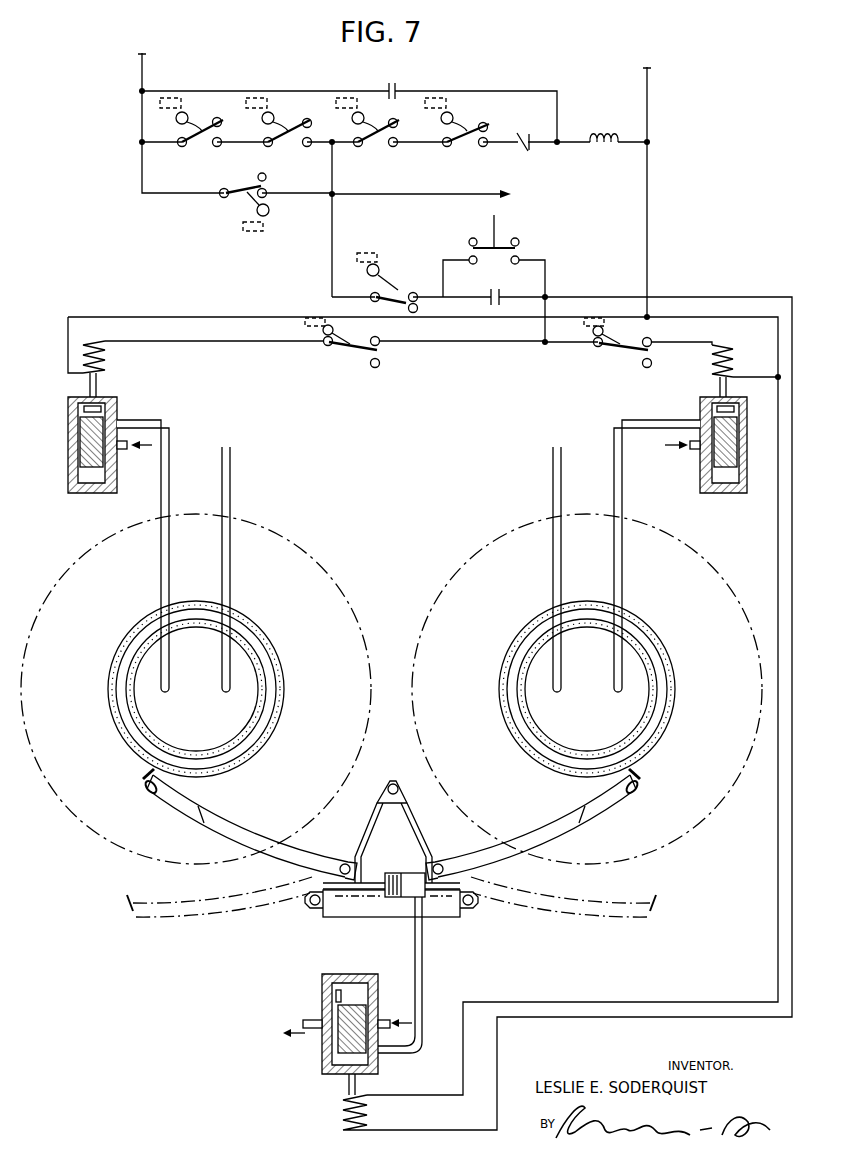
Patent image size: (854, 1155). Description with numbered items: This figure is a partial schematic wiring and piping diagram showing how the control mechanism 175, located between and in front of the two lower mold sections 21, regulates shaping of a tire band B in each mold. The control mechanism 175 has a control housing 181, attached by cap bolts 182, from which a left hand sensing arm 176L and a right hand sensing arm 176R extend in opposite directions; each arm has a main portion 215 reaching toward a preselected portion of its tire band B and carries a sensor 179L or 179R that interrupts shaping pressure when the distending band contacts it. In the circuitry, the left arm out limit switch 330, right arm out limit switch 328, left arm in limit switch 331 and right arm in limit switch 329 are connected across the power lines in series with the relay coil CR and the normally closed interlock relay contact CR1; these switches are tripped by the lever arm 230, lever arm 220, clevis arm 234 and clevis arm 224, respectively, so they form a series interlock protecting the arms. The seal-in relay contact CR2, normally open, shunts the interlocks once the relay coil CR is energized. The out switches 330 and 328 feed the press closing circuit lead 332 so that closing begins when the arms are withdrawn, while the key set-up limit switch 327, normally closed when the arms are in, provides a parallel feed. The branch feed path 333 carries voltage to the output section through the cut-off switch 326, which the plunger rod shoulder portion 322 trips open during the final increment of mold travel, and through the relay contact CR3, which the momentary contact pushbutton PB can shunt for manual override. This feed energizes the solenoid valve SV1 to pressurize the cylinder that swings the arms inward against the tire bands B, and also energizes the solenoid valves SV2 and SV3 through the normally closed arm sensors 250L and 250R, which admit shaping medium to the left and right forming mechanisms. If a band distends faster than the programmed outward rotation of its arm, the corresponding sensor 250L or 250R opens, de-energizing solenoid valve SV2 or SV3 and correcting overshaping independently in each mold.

The lever arm 230 is at (180, 97).
The lever arm 220 is at (266, 97).
The clevis arm 234 is at (350, 97).
The clevis arm 224 is at (437, 96).
The left arm out limit switch 330 is at (203, 133).
The right arm out limit switch 328 is at (296, 130).
The left arm in limit switch 331 is at (378, 133).
The right arm in limit switch 329 is at (472, 133).
The limit switch 327 is at (238, 190).
The shoulder portion 322 is at (246, 230).
The branch feed path 333 is at (332, 252).
The press closing circuit lead 332 is at (512, 194).
The cut-off switch 326 is at (400, 294).
The momentary contact pushbutton PB is at (507, 247).
The relay coil CR is at (597, 138).
The interlock relay contact CR1 is at (541, 128).
The seal-in relay contact CR2 is at (395, 86).
The relay contact CR3 is at (490, 290).
The arm sensor 250L is at (355, 350).
The arm sensor 250R is at (622, 352).
The solenoid valve SV1 is at (318, 1062).
The solenoid valve SV2 is at (124, 405).
The solenoid valve SV3 is at (692, 408).
The lower mold section 21 is at (420, 556).
The tire band B is at (262, 640).
The main portion 215 is at (231, 826).
The left hand sensing arm 176L is at (258, 867).
The right hand sensing arm 176R is at (567, 856).
The sensor 179L is at (149, 801).
The sensor 179R is at (628, 800).
The cap bolts 182 is at (316, 906).
The control housing 181 is at (472, 908).
The control mechanism 175 is at (367, 924).